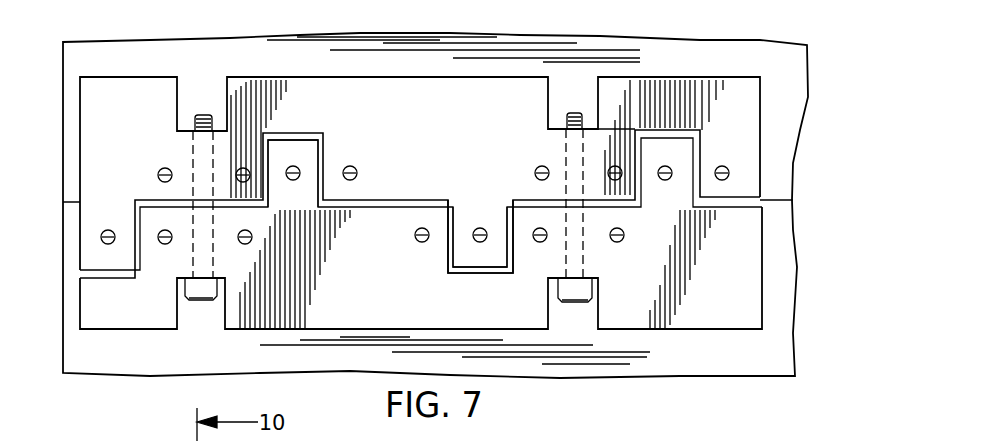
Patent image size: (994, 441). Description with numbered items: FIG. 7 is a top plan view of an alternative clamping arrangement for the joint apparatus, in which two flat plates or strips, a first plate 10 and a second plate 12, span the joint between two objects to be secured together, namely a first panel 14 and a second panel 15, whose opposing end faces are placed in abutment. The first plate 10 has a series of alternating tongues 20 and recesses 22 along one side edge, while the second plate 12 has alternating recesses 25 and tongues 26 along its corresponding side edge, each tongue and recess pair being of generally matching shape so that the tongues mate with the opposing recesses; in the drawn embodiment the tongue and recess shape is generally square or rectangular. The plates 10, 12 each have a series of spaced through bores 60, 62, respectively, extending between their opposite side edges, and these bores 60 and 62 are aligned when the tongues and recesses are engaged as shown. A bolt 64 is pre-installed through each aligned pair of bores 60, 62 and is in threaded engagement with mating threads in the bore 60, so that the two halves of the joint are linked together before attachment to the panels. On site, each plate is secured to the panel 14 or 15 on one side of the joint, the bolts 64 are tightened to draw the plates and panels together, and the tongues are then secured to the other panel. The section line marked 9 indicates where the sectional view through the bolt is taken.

The section line 9- 9 is at (632, 412).
The first plate 10 is at (98, 127).
The second plate 12 is at (85, 314).
The first panel 14 is at (782, 108).
The second panel 15 is at (777, 288).
The tongues 20 is at (488, 262).
The recesses 22 is at (330, 158).
The recesses 25 is at (449, 268).
The tongues 26 is at (297, 150).
The through bores 60 is at (193, 152).
The through bores 62 is at (190, 253).
The bolt 64 is at (198, 295).